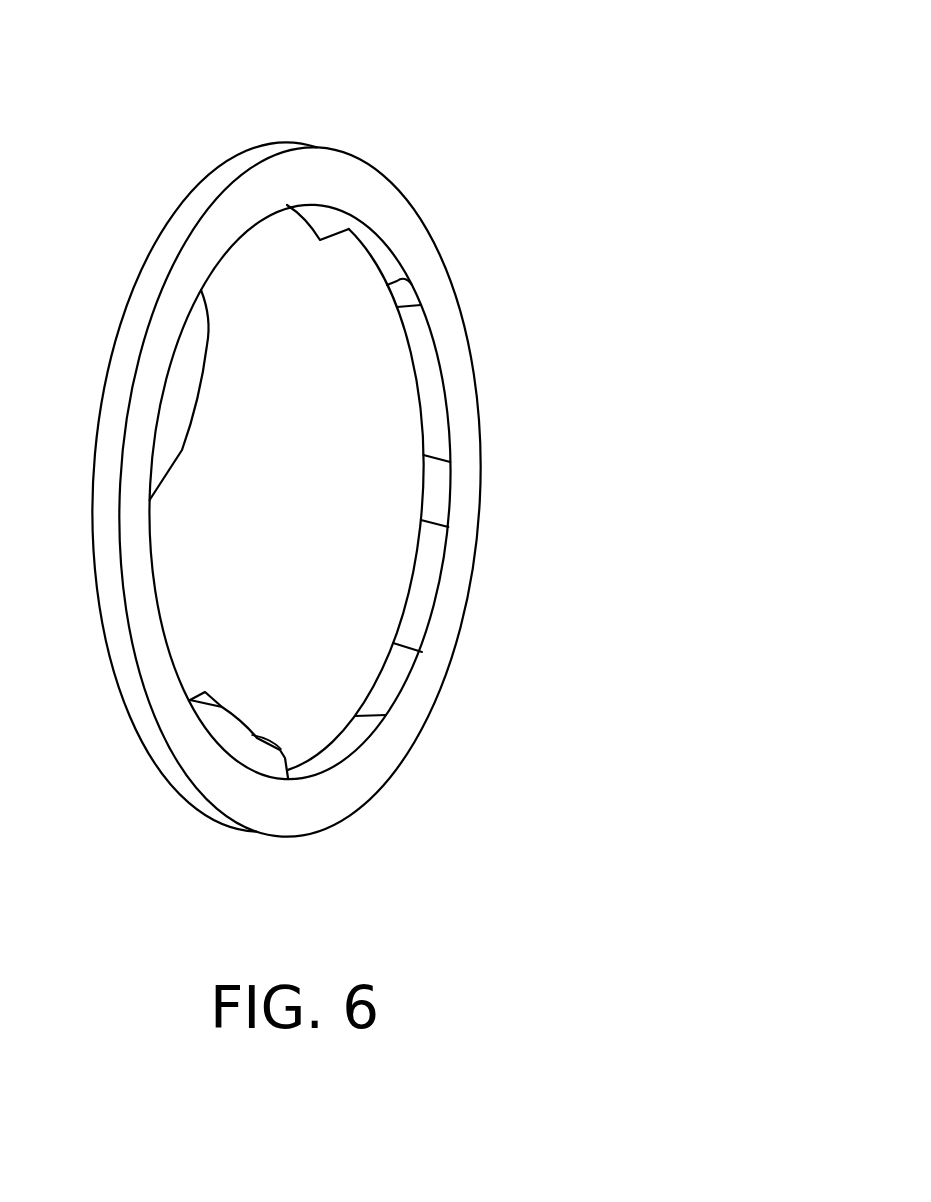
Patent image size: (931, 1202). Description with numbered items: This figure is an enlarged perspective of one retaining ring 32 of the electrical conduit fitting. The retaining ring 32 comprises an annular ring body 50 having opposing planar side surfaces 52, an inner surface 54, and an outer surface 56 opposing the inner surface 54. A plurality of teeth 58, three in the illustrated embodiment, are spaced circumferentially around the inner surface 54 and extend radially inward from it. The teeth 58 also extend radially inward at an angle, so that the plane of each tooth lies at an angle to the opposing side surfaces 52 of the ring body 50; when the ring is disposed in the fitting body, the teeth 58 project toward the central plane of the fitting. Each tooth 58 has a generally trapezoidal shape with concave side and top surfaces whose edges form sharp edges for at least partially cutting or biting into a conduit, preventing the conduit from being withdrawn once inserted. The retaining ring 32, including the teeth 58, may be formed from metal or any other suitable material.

The retaining ring 32 is at (533, 78).
The annular ring body 50 is at (453, 657).
The planar side surface 52 is at (457, 375).
The inner surface 54 is at (387, 699).
The outer surface 56 is at (223, 178).
The tooth 58 is at (357, 248).